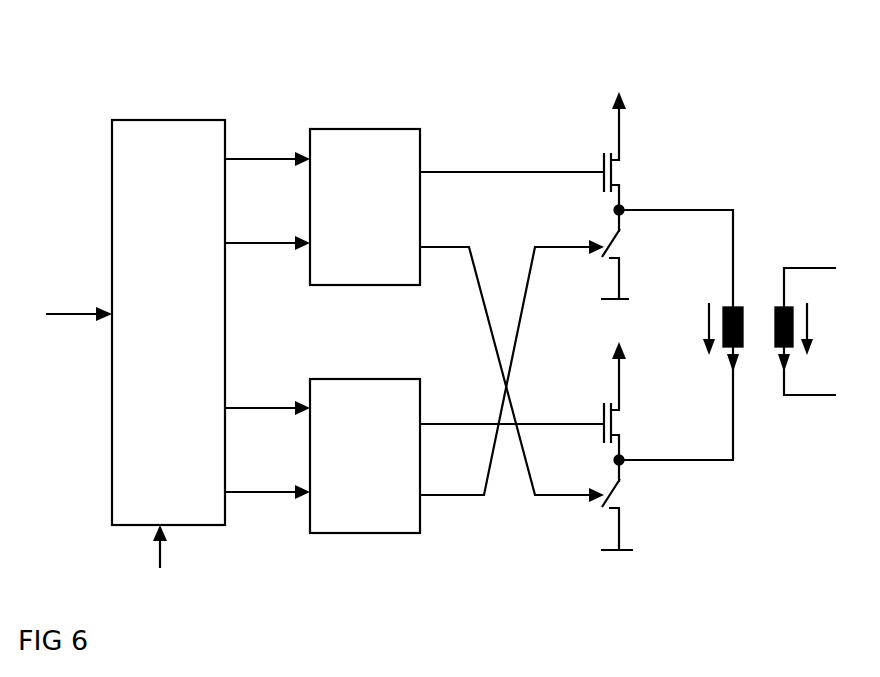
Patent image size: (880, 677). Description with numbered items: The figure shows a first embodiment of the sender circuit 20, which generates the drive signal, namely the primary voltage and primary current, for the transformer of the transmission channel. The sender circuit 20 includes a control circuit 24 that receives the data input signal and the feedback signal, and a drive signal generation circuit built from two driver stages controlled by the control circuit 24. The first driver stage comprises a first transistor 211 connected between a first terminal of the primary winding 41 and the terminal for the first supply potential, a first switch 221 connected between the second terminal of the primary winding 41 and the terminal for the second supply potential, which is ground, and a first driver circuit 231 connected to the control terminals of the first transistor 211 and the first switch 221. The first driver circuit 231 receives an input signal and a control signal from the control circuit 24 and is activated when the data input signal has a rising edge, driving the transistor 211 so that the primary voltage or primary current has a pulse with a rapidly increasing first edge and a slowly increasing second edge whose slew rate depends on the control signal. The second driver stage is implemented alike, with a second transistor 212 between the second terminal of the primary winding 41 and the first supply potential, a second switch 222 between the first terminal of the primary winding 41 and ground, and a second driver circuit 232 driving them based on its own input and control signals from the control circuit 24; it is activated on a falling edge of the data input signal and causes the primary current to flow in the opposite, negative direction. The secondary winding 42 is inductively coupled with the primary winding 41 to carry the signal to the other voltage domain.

The sender circuit 20 is at (475, 92).
The control circuit 24 is at (168, 120).
The first driver circuit 231 is at (366, 129).
The second driver circuit 232 is at (366, 379).
The first transistor 211 is at (624, 174).
The second transistor 212 is at (625, 425).
The first switch 221 is at (627, 500).
The second switch 222 is at (627, 250).
The primary winding 41 is at (741, 300).
The secondary winding 42 is at (772, 362).